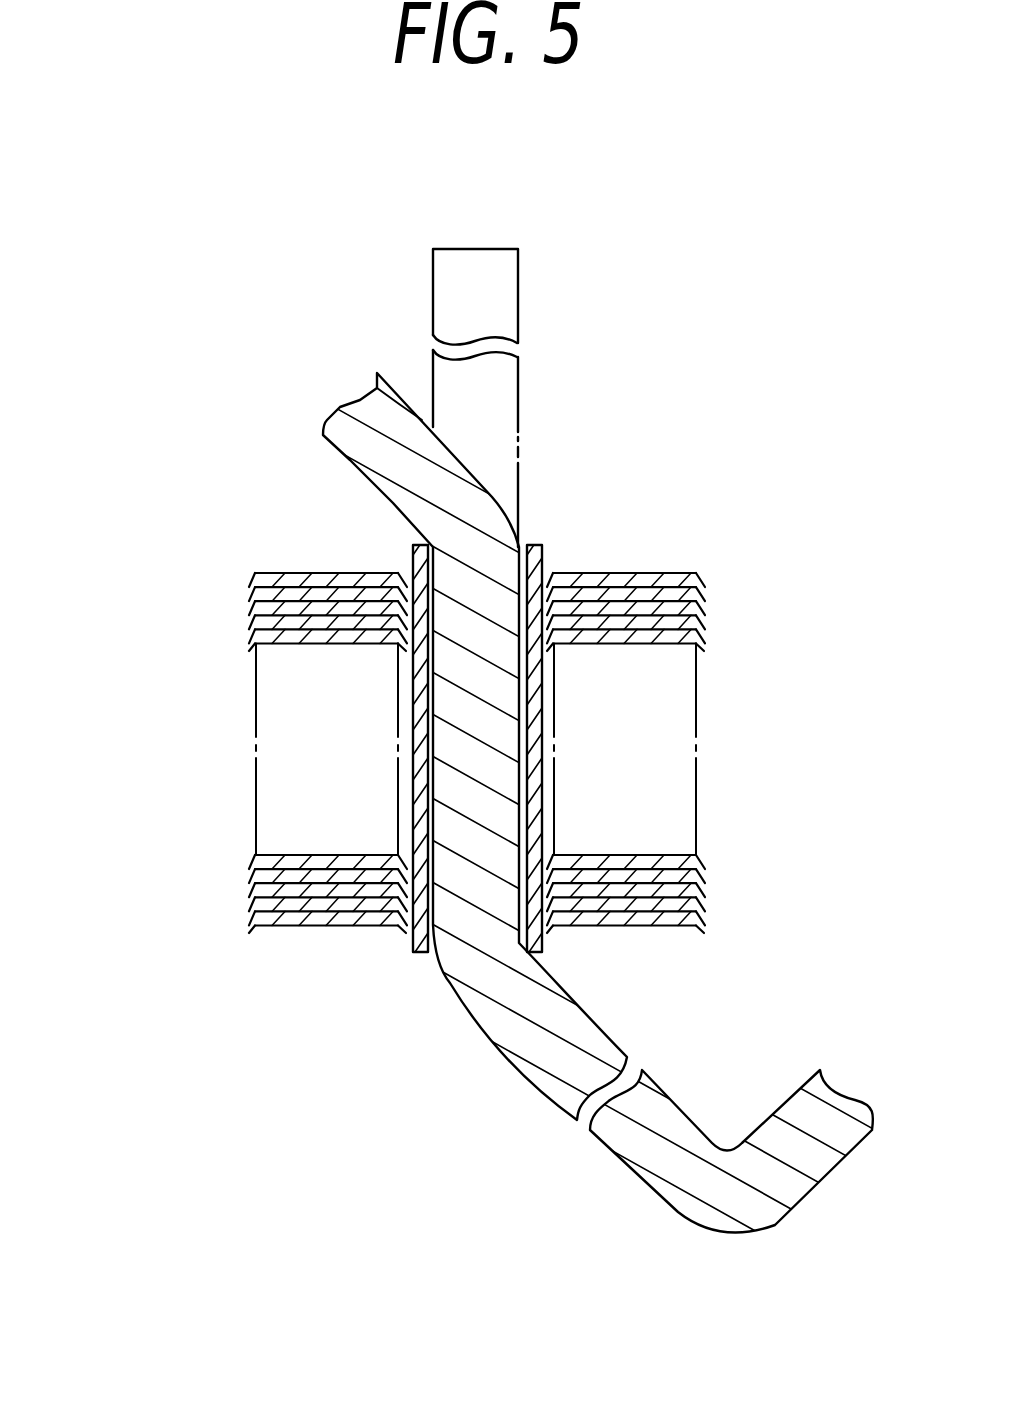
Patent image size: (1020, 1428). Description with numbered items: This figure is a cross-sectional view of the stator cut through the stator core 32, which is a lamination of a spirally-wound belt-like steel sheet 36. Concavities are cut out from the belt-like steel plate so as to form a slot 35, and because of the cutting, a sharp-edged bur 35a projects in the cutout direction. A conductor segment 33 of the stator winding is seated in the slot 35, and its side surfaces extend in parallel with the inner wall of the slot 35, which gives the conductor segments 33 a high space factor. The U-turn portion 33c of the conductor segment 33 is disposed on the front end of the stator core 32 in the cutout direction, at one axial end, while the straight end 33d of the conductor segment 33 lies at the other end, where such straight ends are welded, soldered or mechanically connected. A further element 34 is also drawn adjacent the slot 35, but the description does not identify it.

The stator core 32 is at (235, 591).
The conductor segment 33 is at (468, 1053).
The U-turn portion 33c is at (748, 1232).
The straight end 33d is at (495, 249).
The plate 34 is at (535, 943).
The slot 35 is at (476, 747).
The sharp-edged bur 35a is at (390, 935).
The belt-like steel sheet 36 is at (702, 577).